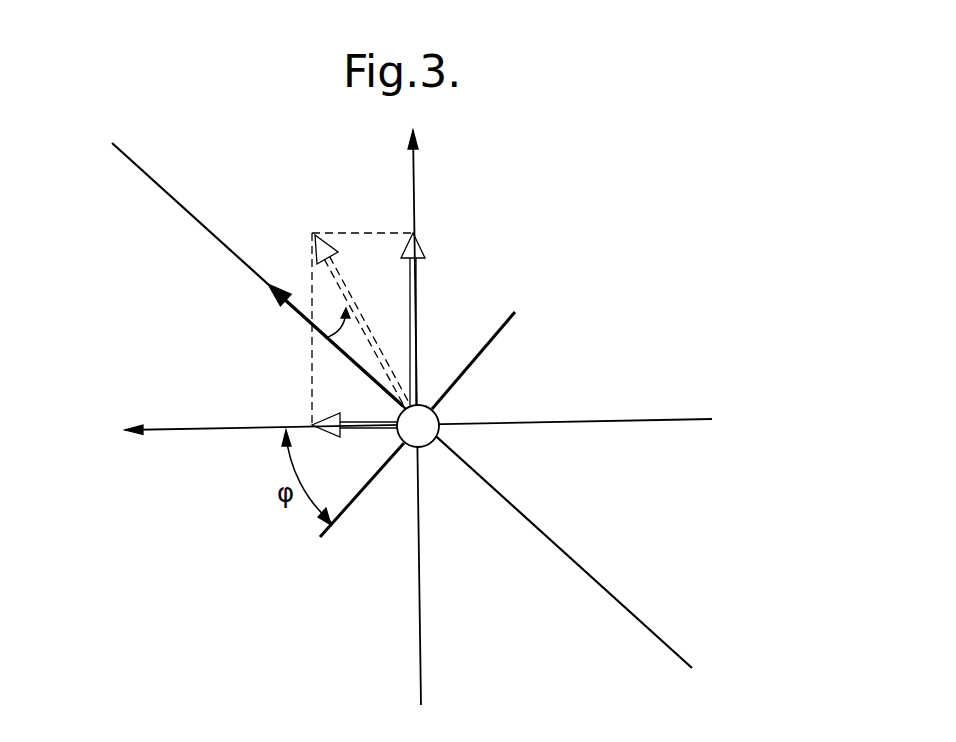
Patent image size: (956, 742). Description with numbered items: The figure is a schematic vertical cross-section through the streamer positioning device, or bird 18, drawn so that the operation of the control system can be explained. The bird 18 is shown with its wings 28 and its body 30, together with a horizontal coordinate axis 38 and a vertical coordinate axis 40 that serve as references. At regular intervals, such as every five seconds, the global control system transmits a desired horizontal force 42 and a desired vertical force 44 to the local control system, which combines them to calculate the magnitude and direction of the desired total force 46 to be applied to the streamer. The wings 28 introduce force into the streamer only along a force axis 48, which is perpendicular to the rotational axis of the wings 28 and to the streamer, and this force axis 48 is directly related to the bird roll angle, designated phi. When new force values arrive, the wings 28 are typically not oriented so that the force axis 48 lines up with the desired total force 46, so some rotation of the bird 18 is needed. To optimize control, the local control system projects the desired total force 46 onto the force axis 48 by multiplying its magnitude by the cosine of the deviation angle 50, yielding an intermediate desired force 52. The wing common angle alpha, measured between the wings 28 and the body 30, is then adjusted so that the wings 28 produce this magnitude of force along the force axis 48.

The bird 18 is at (578, 283).
The wings 28 is at (505, 327).
The body 30 is at (438, 412).
The horizontal coordinate axis 38 is at (150, 432).
The vertical coordinate axis 40 is at (413, 168).
The desired horizontal force 42 is at (360, 419).
The desired vertical force 44 is at (415, 318).
The desired total force 46 is at (345, 288).
The force axis 48 is at (185, 208).
The deviation angle 50 is at (325, 339).
The intermediate desired force 52 is at (271, 300).